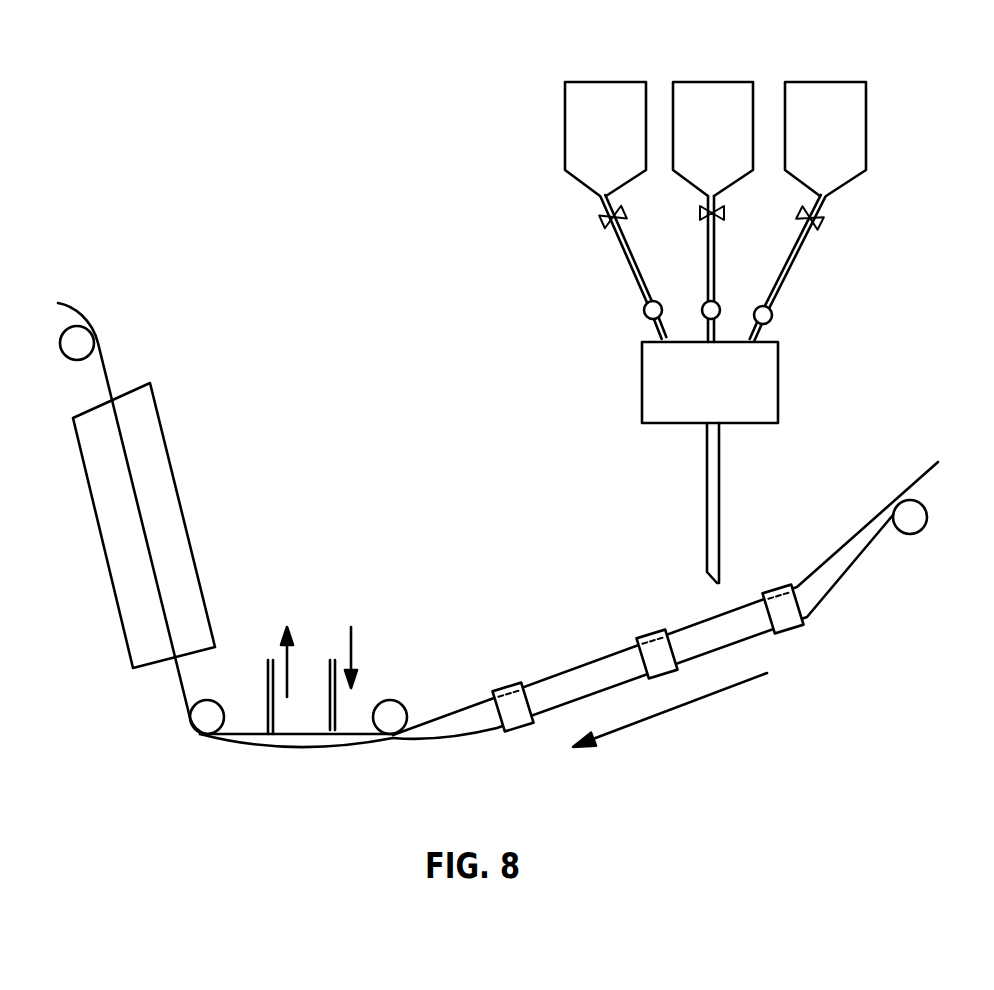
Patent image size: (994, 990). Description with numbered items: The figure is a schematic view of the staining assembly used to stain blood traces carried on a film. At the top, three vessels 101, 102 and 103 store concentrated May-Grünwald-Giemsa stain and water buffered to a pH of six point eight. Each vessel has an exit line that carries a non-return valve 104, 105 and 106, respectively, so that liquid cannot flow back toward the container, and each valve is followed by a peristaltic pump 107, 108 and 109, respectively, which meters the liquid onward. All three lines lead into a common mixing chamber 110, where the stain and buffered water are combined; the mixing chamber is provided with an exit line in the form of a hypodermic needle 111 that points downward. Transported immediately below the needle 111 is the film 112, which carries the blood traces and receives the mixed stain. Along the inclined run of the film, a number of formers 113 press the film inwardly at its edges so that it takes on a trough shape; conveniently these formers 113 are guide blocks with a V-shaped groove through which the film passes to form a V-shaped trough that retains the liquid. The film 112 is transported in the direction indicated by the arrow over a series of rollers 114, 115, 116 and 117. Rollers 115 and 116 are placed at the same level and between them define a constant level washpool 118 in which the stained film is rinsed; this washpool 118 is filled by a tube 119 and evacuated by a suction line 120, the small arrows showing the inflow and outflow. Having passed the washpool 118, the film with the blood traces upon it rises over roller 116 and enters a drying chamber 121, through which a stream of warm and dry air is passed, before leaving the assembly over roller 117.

The vessel 101 is at (566, 86).
The vessel 102 is at (683, 80).
The vessel 103 is at (790, 80).
The non-return valve 104 is at (623, 212).
The non-return valve 105 is at (723, 210).
The non-return valve 106 is at (832, 220).
The peristaltic pump 107 is at (676, 285).
The peristaltic pump 108 is at (716, 301).
The peristaltic pump 109 is at (771, 306).
The mixing chamber 110 is at (760, 390).
The hypodermic needle 111 is at (717, 510).
The film 112 is at (827, 558).
The formers 113 is at (503, 688).
The roller 114 is at (915, 520).
The roller 115 is at (393, 740).
The roller 116 is at (200, 737).
The roller 117 is at (78, 353).
The washpool 118 is at (300, 744).
The tube 119 is at (330, 662).
The suction line 120 is at (266, 664).
The drying chamber 121 is at (170, 525).